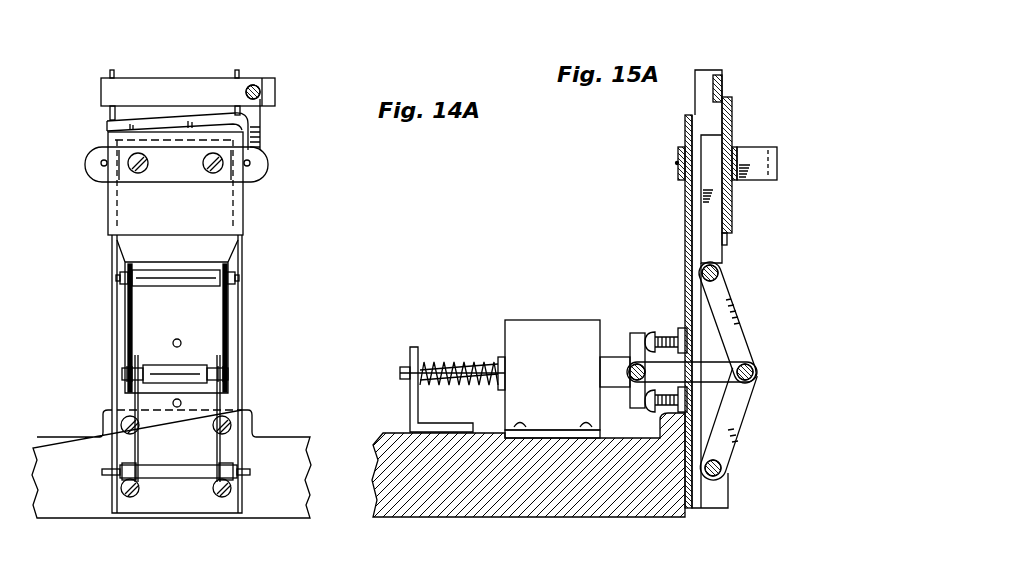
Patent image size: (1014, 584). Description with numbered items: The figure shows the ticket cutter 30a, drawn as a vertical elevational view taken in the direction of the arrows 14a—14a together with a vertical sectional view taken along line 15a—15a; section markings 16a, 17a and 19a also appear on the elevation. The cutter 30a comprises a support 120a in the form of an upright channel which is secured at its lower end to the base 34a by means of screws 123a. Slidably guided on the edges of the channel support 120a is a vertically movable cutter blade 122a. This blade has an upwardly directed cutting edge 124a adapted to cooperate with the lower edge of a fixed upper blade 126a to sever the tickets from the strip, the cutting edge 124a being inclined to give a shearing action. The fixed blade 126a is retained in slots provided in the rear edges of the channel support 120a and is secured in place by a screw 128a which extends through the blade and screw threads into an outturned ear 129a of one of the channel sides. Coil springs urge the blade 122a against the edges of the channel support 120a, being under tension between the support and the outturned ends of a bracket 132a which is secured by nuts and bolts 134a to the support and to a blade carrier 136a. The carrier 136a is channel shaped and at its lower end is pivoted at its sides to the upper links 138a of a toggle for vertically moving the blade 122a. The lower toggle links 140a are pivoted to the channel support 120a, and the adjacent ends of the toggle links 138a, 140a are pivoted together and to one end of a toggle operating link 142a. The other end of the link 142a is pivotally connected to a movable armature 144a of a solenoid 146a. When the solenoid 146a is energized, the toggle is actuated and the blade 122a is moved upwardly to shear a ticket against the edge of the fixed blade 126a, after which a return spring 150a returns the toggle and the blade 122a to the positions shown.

In FIG. 15A, the arrows 14a— 14a is at (788, 30).
In FIG. 14A, the line 15a— 15a is at (130, 42).
In FIG. 14A, the section line 16a- 16a is at (288, 168).
In FIG. 14A, the section line 17a- 17a is at (295, 96).
In FIG. 14A, the section line 19a- 19a is at (270, 468).
In FIG. 14A, the cutter 30a is at (248, 291).
In FIG. 14A, the base 34a is at (298, 518).
In FIG. 15A, the base 34a is at (612, 514).
In FIG. 14A, the support 120a is at (243, 384).
In FIG. 15A, the support 120a is at (687, 258).
In FIG. 14A, the cutter blade 122a is at (243, 211).
In FIG. 15A, the cutter blade 122a is at (733, 226).
In FIG. 14A, the screws 123a is at (127, 494).
In FIG. 14A, the cutting edge 124a is at (160, 118).
In FIG. 15A, the cutting edge 124a is at (732, 113).
In FIG. 14A, the fixed upper blade 126a is at (199, 87).
In FIG. 15A, the fixed upper blade 126a is at (722, 90).
In FIG. 14A, the screw 128a is at (257, 86).
In FIG. 14A, the outturned ear 129a is at (275, 91).
In FIG. 14A, the bracket 132a is at (162, 183).
In FIG. 15A, the bracket 132a is at (768, 178).
In FIG. 14A, the nuts and bolts 134a is at (205, 205).
In FIG. 15A, the blade carrier 136a is at (716, 262).
In FIG. 14A, the upper links 138a is at (130, 321).
In FIG. 15A, the upper links 138a is at (733, 303).
In FIG. 14A, the lower toggle links 140a is at (136, 448).
In FIG. 15A, the lower toggle links 140a is at (740, 412).
In FIG. 15A, the toggle operating link 142a is at (707, 368).
In FIG. 15A, the movable armature 144a is at (618, 350).
In FIG. 15A, the solenoid 146a is at (552, 328).
In FIG. 15A, the return spring 150a is at (450, 363).